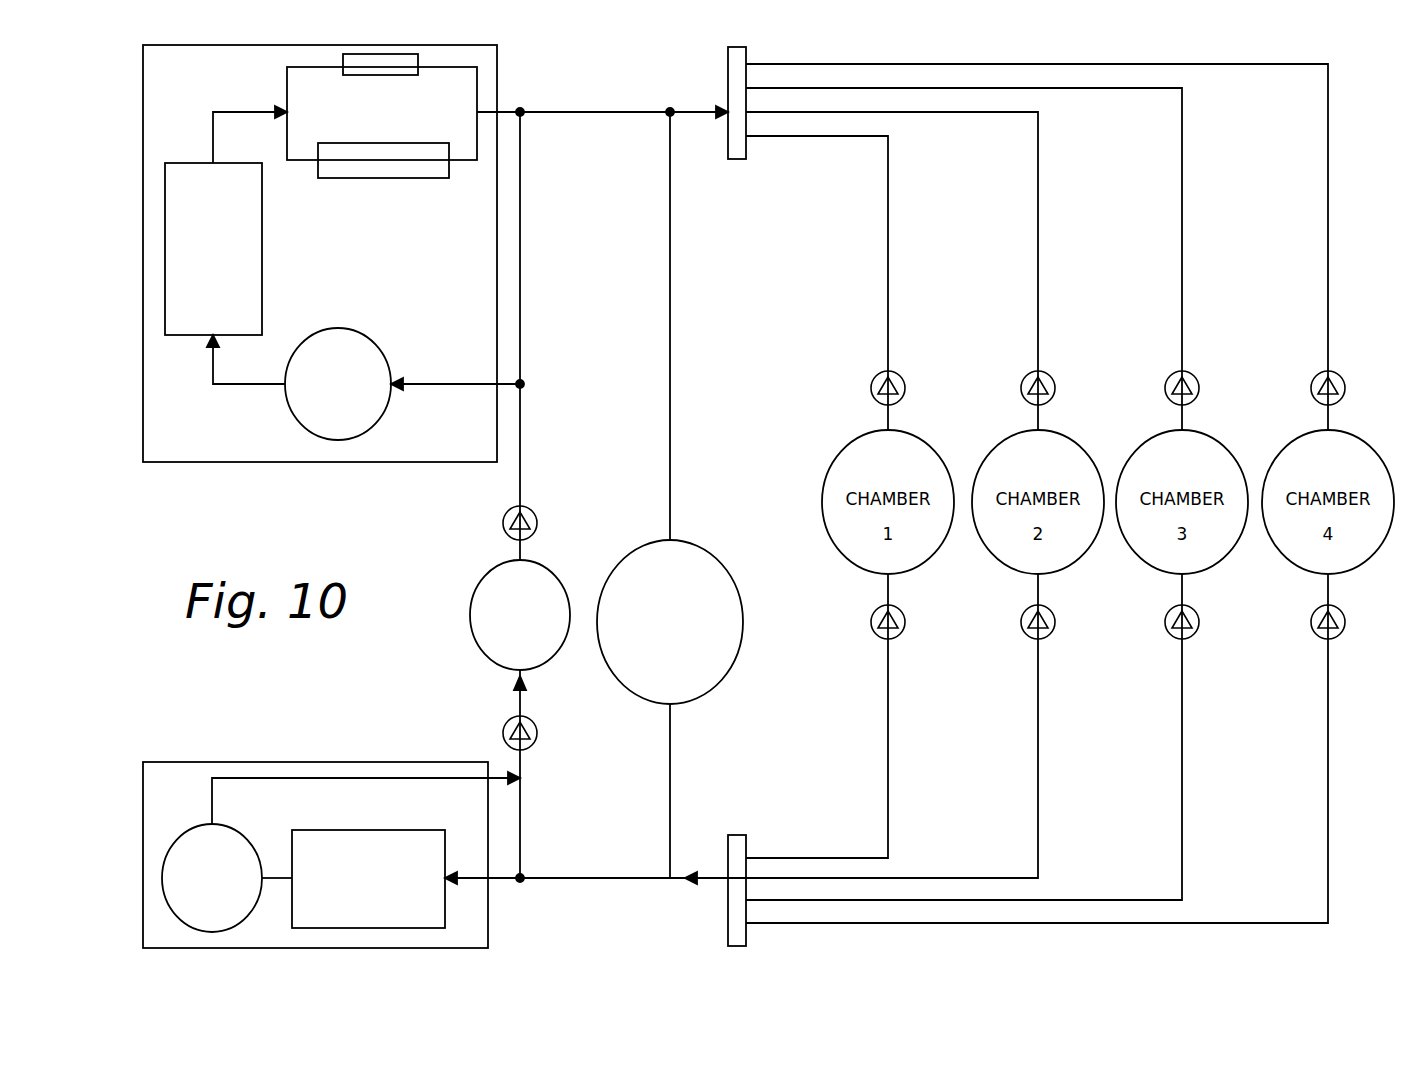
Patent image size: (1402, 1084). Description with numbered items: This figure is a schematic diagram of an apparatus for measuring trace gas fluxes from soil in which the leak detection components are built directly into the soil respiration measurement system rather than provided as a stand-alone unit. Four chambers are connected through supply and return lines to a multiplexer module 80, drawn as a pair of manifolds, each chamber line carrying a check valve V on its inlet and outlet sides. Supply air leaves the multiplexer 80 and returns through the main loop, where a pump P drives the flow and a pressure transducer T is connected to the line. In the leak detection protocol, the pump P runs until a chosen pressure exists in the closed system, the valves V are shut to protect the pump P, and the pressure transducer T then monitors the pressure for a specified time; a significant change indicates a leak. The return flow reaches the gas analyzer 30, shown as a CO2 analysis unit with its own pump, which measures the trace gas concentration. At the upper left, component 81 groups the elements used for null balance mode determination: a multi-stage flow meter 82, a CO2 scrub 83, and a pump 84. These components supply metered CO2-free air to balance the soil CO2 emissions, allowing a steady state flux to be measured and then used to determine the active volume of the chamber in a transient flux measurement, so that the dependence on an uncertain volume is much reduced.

The gas analyzer 30 is at (223, 762).
The multiplexer module 80 is at (728, 62).
The null balance mode determination components 81 is at (220, 462).
The multi-stage flow meter 82 is at (396, 179).
The CO2 scrub 83 is at (262, 258).
The pump 84 is at (382, 346).
The valve V is at (868, 544).
The pump P is at (555, 572).
The pressure transducer T is at (712, 552).